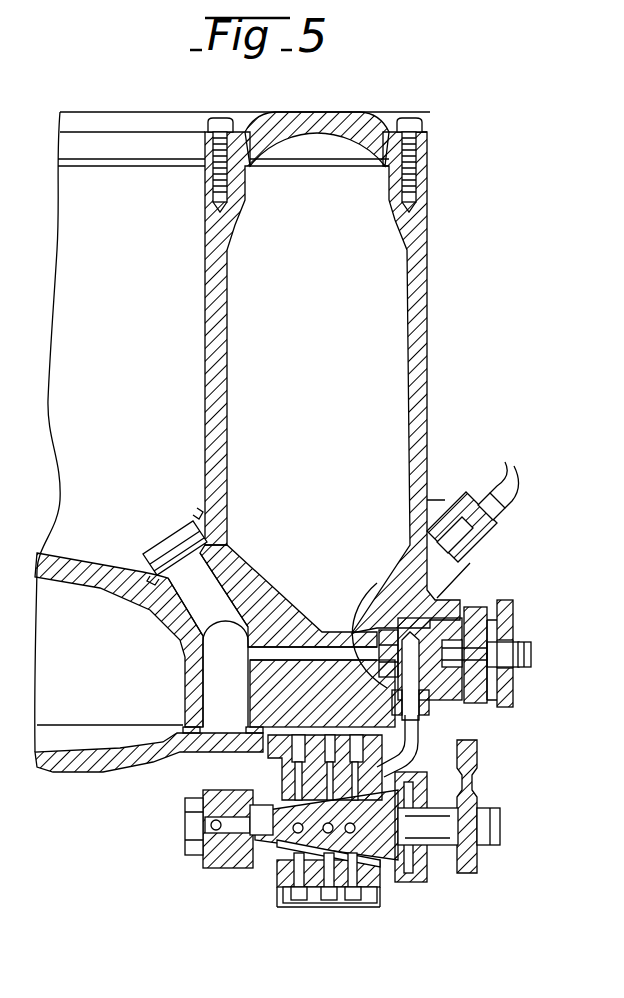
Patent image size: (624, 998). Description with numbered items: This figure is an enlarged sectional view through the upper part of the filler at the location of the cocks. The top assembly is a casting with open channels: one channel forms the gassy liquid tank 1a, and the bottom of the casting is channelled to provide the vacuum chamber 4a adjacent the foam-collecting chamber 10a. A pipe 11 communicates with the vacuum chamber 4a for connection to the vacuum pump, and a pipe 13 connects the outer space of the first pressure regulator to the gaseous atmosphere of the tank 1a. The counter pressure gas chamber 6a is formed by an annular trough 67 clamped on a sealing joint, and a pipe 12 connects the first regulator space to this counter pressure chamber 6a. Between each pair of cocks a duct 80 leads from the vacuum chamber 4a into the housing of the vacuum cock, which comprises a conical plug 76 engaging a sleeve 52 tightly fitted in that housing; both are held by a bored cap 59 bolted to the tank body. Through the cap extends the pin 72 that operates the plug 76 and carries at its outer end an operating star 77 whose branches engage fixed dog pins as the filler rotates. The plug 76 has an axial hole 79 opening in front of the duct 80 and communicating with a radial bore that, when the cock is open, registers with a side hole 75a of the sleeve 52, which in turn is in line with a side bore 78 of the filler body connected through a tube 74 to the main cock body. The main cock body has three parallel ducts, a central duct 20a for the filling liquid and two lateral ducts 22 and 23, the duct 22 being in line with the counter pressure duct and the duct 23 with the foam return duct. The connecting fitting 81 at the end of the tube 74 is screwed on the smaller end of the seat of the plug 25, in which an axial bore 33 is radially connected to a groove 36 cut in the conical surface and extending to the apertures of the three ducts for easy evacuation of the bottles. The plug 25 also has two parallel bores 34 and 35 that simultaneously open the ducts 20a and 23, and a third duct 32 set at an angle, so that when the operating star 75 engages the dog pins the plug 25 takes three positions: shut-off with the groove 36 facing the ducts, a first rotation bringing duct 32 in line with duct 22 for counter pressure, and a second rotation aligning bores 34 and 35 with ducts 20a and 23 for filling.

The gassy liquid tank 1a is at (352, 330).
The foam-collecting chamber 10a is at (73, 605).
The pipe 11 is at (160, 536).
The pin 72 is at (205, 592).
The vacuum chamber 4a is at (215, 662).
The duct 80 is at (310, 640).
The side hole 75a is at (374, 660).
The pipe 13 is at (345, 652).
The sleeve 52 is at (388, 632).
The hole 79 is at (403, 638).
The conical plug 76 is at (466, 607).
The bored cap 59 is at (515, 605).
The operating star 77 is at (516, 695).
The side bore 78 is at (418, 706).
The tube 74 is at (410, 751).
The operating star 75 is at (470, 762).
The counter pressure gas chamber 6a is at (490, 524).
The annular trough 67 is at (453, 512).
The pipe 12 is at (507, 487).
The central duct 20a is at (345, 905).
The axial bore 33 is at (268, 820).
The parallel bore 35 is at (298, 846).
The connecting fitting 81 is at (212, 862).
The groove 36 is at (312, 870).
The lateral duct 23 is at (299, 892).
The parallel bore 34 is at (328, 855).
The lateral duct 22 is at (355, 893).
The plug 25 is at (395, 882).
The third duct 32 is at (422, 882).